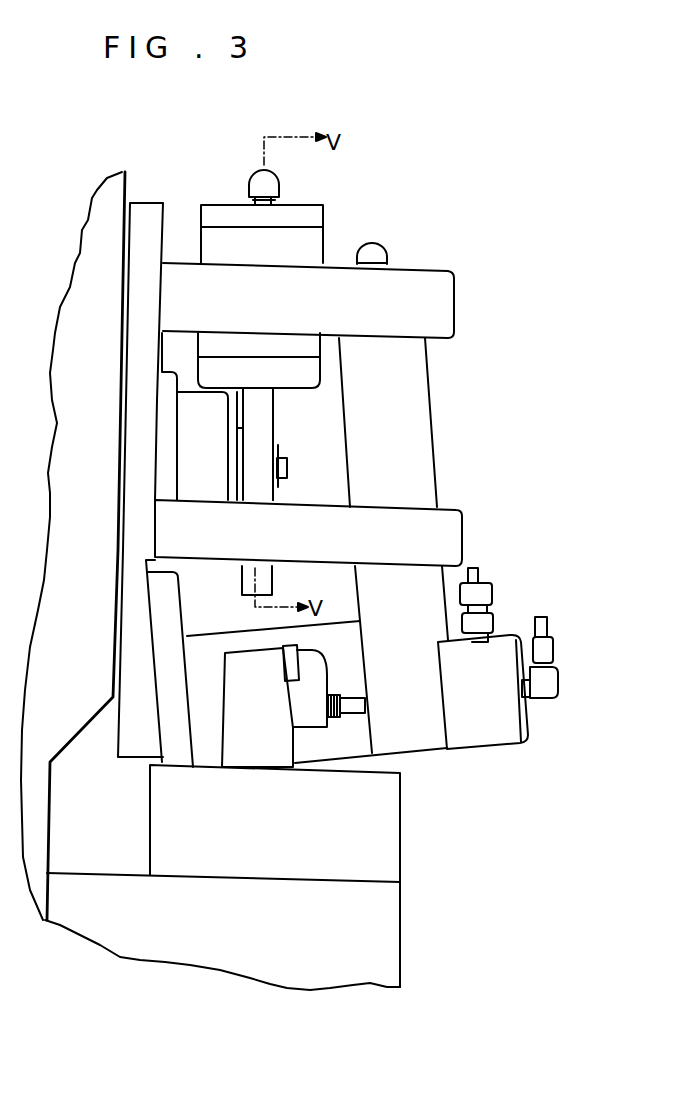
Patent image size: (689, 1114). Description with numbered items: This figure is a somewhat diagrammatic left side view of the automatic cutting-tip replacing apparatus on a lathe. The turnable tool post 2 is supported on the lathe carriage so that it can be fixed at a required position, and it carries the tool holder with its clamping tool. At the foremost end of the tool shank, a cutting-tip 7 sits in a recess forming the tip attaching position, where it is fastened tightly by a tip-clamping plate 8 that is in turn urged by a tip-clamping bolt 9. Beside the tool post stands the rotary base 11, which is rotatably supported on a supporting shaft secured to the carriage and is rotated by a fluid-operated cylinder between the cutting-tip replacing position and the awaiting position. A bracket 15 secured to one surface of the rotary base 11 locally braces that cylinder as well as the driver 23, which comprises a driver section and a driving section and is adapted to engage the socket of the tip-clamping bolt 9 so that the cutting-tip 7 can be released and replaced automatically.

The tool post 2 is at (380, 913).
The cutting-tip 7 is at (286, 672).
The tip-clamping plate 8 is at (312, 676).
The tip-clamping bolt 9 is at (338, 714).
The rotary base 11 is at (148, 215).
The bracket 15 is at (430, 283).
The driver 23 is at (426, 413).